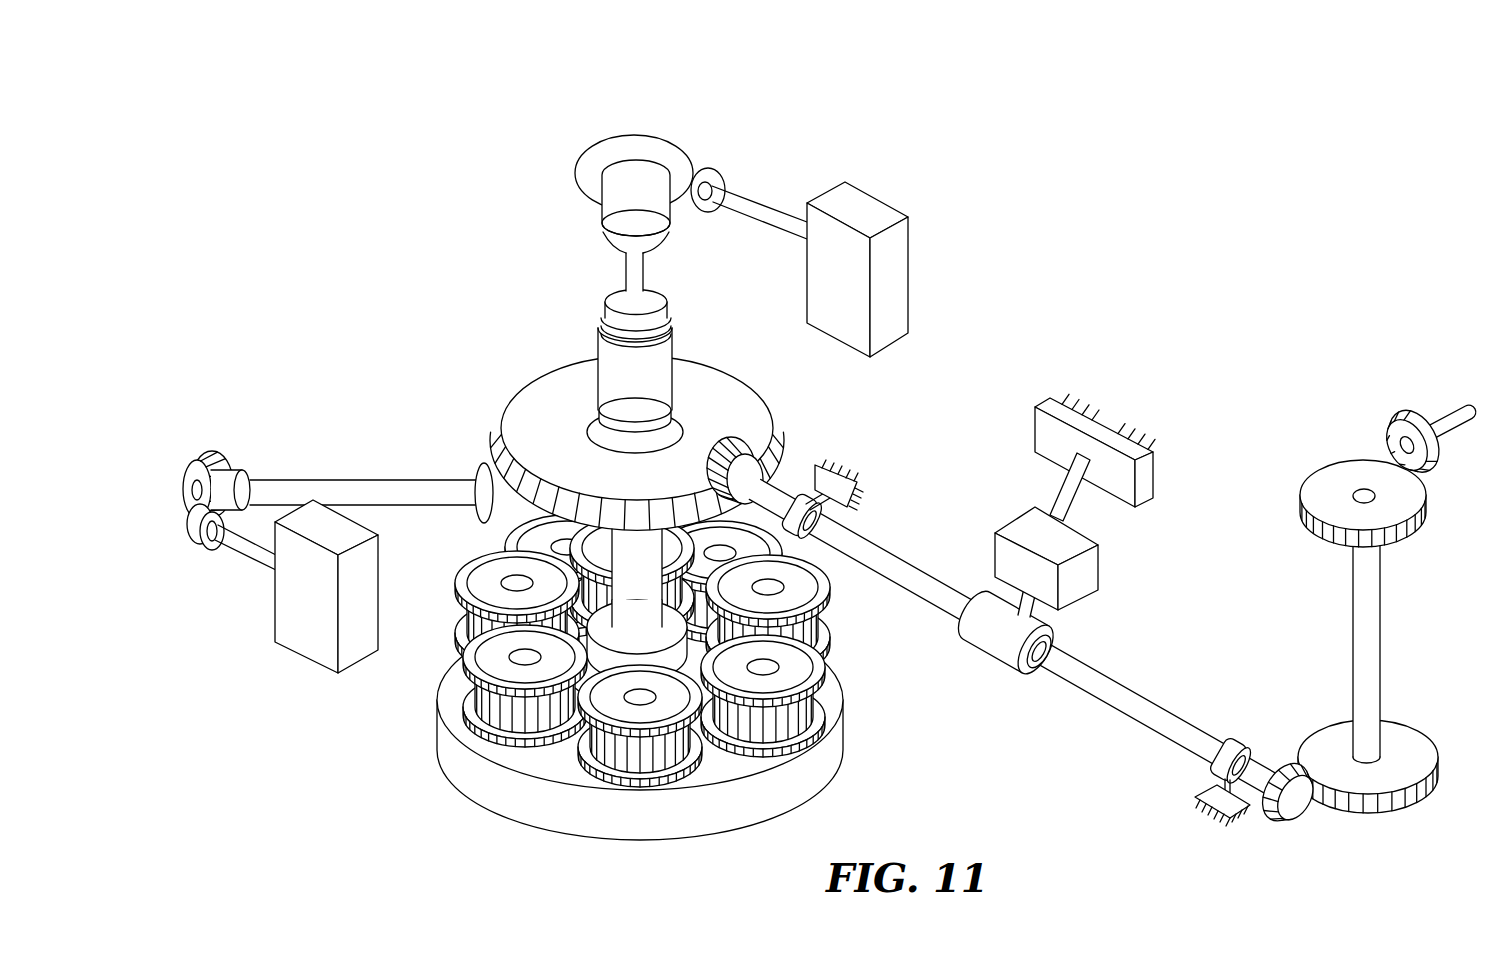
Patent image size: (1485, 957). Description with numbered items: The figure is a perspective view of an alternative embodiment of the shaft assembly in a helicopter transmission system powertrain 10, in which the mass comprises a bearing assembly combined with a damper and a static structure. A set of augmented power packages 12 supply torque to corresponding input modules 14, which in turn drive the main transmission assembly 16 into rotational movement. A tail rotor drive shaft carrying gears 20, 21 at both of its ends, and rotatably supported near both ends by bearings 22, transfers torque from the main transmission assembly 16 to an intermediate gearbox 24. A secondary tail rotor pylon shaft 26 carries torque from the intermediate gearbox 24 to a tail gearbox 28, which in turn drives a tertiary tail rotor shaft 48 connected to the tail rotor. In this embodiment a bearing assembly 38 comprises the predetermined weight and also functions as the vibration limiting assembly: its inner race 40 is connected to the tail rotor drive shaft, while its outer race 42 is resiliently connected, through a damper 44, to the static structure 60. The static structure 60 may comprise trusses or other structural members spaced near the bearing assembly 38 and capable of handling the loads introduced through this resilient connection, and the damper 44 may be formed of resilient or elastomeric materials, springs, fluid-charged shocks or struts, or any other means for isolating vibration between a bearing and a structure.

The helicopter transmission system powertrain 10 is at (402, 256).
The augmented power packages 12 is at (862, 200).
The input modules 14 is at (607, 125).
The main transmission assembly 16 is at (487, 366).
The gear 20 is at (765, 437).
The gear 21 is at (1270, 802).
The bearings 22 is at (803, 540).
The intermediate gearbox 24 is at (1338, 842).
The secondary tail rotor pylon shaft 26 is at (1380, 650).
The tail gearbox 28 is at (1336, 436).
The bearing assembly 38 is at (967, 668).
The inner race 40 is at (1048, 637).
The outer race 42 is at (985, 612).
The damper 44 is at (1068, 547).
The tertiary tail rotor shaft 48 is at (1447, 407).
The static structure 60 is at (1100, 425).